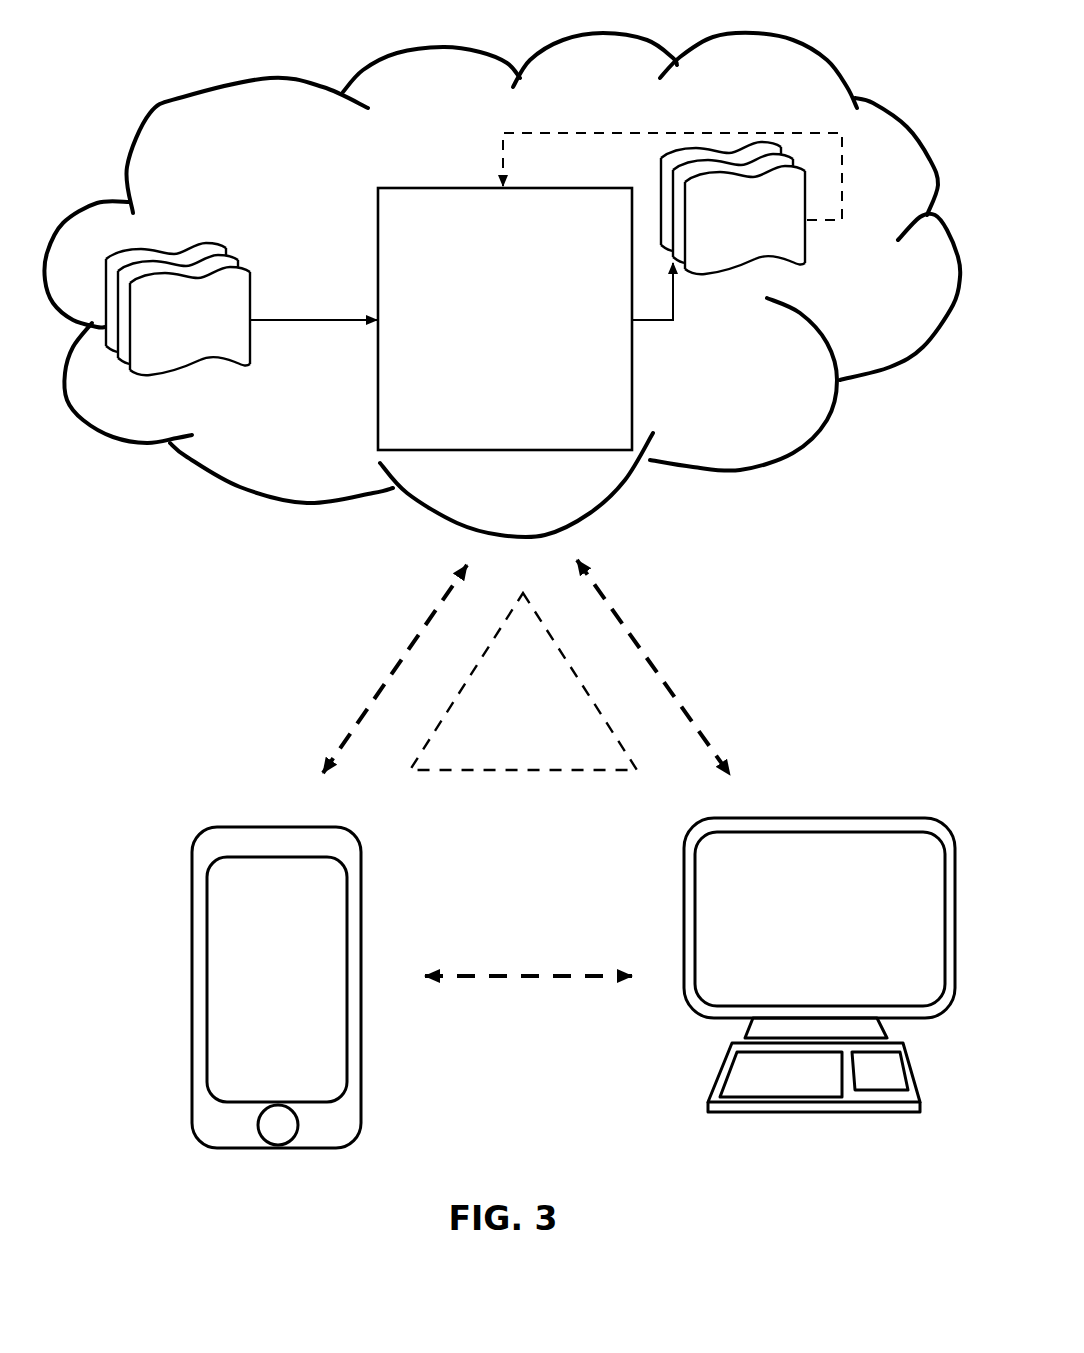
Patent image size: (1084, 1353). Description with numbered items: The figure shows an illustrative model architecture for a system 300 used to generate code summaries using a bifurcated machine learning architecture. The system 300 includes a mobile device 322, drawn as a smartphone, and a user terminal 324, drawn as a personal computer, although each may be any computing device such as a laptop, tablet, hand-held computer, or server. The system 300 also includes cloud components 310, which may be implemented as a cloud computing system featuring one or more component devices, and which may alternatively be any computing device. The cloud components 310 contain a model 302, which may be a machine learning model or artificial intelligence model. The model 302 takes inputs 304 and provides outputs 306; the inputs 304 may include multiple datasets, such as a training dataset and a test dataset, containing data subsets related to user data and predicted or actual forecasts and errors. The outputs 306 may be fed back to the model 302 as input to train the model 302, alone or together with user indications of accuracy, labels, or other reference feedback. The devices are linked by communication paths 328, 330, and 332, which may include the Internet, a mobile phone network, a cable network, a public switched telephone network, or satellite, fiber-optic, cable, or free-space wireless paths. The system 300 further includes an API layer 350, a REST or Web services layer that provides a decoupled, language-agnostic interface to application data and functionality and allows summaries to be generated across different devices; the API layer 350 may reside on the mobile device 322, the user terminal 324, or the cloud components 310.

The system 300 is at (480, 30).
The model 302 is at (485, 333).
The inputs 304 is at (197, 248).
The outputs 306 is at (786, 246).
The cloud components 310 is at (802, 93).
The mobile device 322 is at (268, 805).
The user terminal 324 is at (812, 808).
The communication path 328 is at (352, 656).
The communication path 330 is at (733, 624).
The communication path 332 is at (518, 947).
The API layer 350 is at (507, 706).